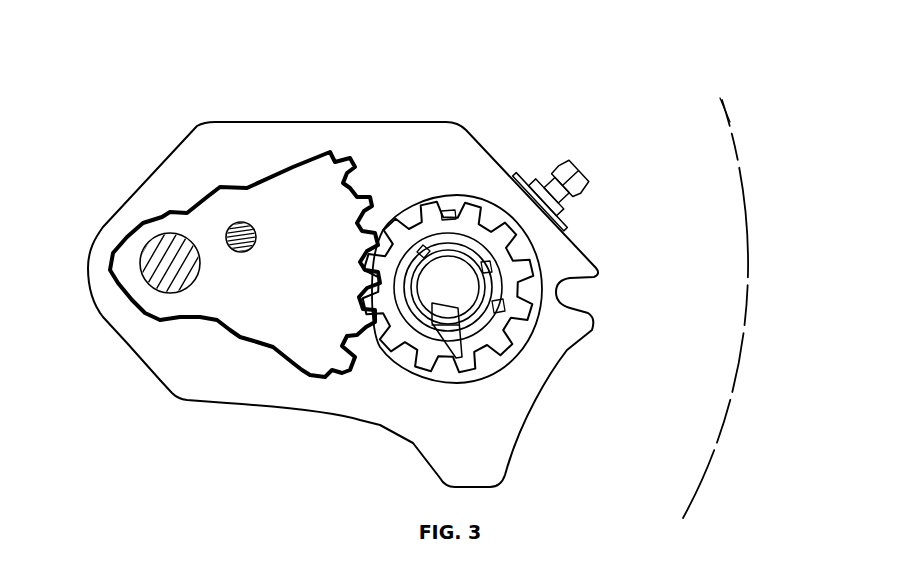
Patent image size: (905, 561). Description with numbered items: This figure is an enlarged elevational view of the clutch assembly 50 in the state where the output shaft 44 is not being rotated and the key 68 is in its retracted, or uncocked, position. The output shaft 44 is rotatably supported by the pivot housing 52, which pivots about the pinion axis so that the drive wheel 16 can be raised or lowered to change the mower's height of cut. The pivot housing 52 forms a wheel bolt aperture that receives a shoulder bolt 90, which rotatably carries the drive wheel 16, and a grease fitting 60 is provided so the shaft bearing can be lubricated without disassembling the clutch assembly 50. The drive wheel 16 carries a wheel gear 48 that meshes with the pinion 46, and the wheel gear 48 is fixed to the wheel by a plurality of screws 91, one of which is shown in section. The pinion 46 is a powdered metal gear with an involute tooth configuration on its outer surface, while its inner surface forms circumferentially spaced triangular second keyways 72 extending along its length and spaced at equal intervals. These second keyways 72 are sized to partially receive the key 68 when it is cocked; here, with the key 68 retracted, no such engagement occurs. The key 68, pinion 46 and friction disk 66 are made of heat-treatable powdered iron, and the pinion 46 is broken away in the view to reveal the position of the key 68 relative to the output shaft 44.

The drive wheel 16 is at (730, 128).
The output shaft 44 is at (452, 261).
The pinion 46 is at (400, 337).
The wheel gear 48 is at (241, 327).
The clutch assembly 50 is at (124, 159).
The pivot housing 52 is at (237, 133).
The grease fitting 60 is at (588, 183).
The friction disk 66 is at (518, 238).
The key 68 is at (458, 345).
The second keyways 72 is at (487, 268).
The shoulder bolt 90 is at (160, 292).
The screw 91 is at (252, 224).